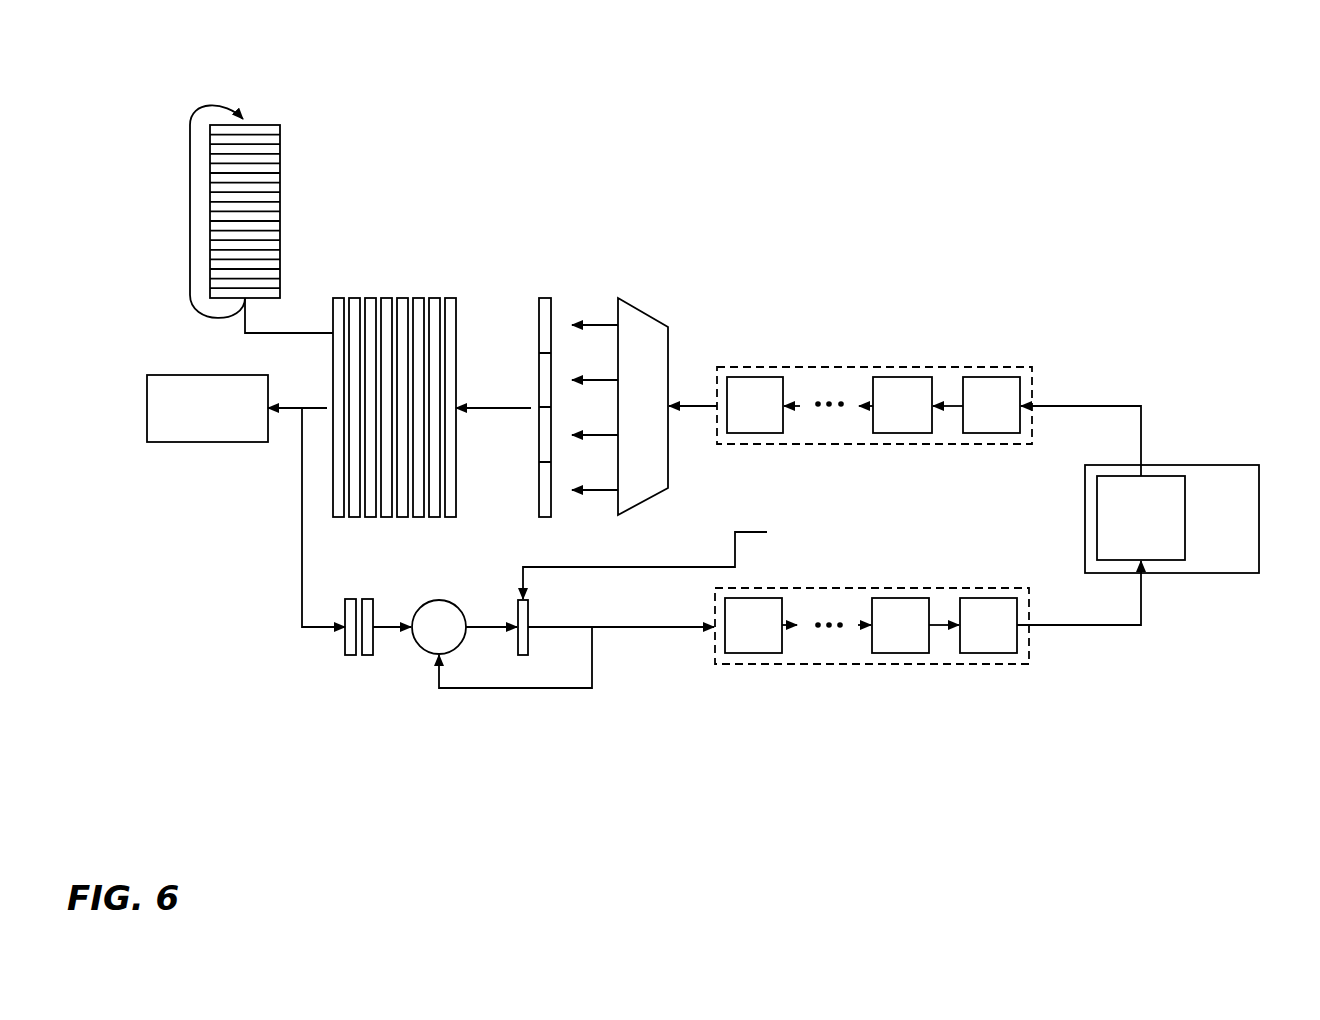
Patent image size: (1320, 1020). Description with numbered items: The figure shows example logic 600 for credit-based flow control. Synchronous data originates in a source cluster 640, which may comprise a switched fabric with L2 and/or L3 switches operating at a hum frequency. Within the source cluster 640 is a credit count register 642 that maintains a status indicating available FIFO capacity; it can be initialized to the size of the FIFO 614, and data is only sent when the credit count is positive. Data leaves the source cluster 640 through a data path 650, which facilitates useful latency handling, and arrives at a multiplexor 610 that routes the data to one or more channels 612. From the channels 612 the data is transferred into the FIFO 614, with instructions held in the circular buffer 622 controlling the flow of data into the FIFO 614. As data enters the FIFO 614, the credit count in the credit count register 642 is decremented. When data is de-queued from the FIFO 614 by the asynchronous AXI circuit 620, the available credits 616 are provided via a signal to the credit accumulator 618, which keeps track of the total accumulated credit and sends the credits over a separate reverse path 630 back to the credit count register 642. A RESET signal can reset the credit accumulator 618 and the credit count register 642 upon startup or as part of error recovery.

The logic for credit-based flow control 600 is at (1186, 75).
The multiplexor 610 is at (643, 310).
The channels 612 is at (544, 298).
The FIFO 614 is at (402, 298).
The available credits 616 is at (350, 657).
The credit accumulator 618 is at (440, 600).
The asynchronous circuit (AXI) 620 is at (192, 435).
The circular buffer 622 is at (265, 121).
The reverse path 630 is at (872, 664).
The source cluster 640 is at (1197, 465).
The credit count register 642 is at (1185, 517).
The data path 650 is at (873, 367).